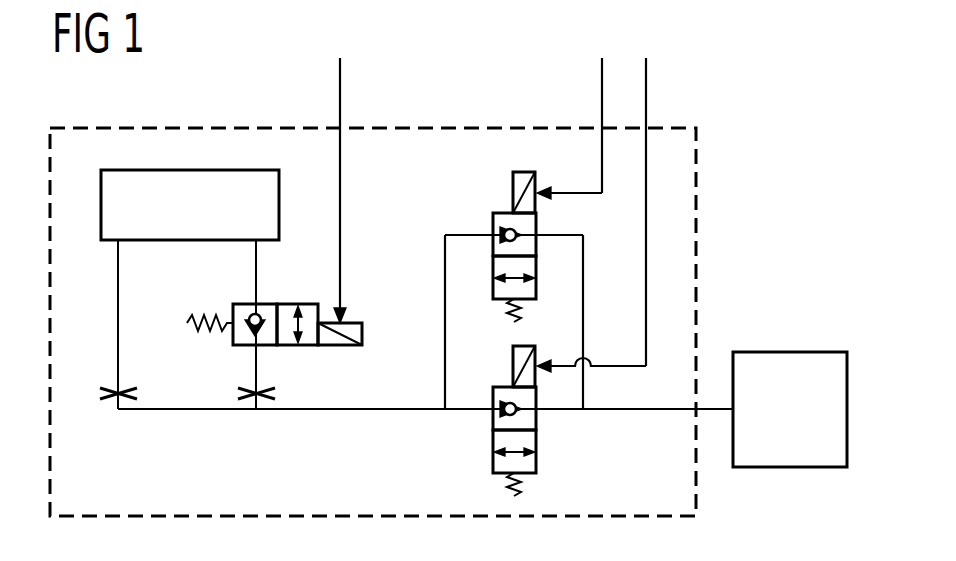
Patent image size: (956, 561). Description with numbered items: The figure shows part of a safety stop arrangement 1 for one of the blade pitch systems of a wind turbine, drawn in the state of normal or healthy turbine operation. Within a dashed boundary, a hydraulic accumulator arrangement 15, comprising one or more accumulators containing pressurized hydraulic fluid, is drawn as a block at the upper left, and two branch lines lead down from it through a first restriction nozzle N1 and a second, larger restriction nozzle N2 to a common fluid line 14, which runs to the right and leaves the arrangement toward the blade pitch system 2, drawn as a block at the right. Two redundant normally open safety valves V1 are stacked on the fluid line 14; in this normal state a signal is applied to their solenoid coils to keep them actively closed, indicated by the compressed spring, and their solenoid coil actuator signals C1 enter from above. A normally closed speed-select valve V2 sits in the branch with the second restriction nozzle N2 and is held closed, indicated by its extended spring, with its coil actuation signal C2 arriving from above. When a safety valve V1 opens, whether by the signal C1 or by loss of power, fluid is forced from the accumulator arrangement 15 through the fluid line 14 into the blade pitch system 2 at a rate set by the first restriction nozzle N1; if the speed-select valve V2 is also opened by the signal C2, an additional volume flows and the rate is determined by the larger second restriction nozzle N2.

The safety stop arrangement 1 is at (790, 86).
The blade pitch system 2 is at (788, 350).
The fluid line 14 is at (343, 413).
The hydraulic accumulator arrangement 15 is at (158, 243).
The first restriction nozzle N1 is at (110, 401).
The second restriction nozzle N2 is at (247, 401).
The safety valve V1 is at (493, 218).
The speed-select valve V2 is at (306, 302).
The coil actuation signal C1 is at (602, 88).
The coil actuation signal C2 is at (340, 87).